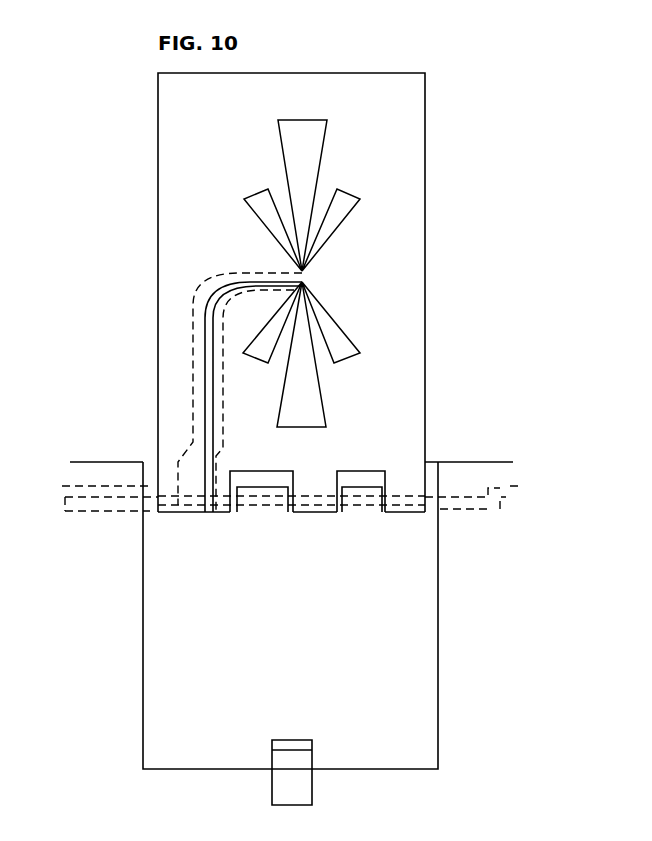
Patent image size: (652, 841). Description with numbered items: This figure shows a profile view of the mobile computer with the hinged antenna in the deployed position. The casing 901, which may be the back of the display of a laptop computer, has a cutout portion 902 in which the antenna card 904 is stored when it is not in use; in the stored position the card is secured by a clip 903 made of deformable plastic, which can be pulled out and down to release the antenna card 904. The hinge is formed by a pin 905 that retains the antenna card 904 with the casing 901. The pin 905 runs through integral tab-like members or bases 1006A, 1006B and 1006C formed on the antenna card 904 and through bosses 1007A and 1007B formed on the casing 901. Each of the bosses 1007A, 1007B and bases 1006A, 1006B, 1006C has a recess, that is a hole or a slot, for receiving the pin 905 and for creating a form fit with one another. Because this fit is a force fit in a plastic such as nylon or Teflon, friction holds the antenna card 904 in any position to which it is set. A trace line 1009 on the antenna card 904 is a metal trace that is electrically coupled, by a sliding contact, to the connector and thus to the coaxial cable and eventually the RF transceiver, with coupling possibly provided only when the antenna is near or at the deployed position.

The casing 901 is at (487, 461).
The cutout portion 902 is at (438, 737).
The clip 903 is at (267, 787).
The antenna card 904 is at (428, 253).
The pin 905 is at (506, 497).
The base 1006A is at (407, 516).
The base 1006B is at (312, 517).
The base 1006C is at (165, 513).
The boss 1007A is at (248, 518).
The boss 1007B is at (358, 515).
The trace line 1009 is at (181, 505).